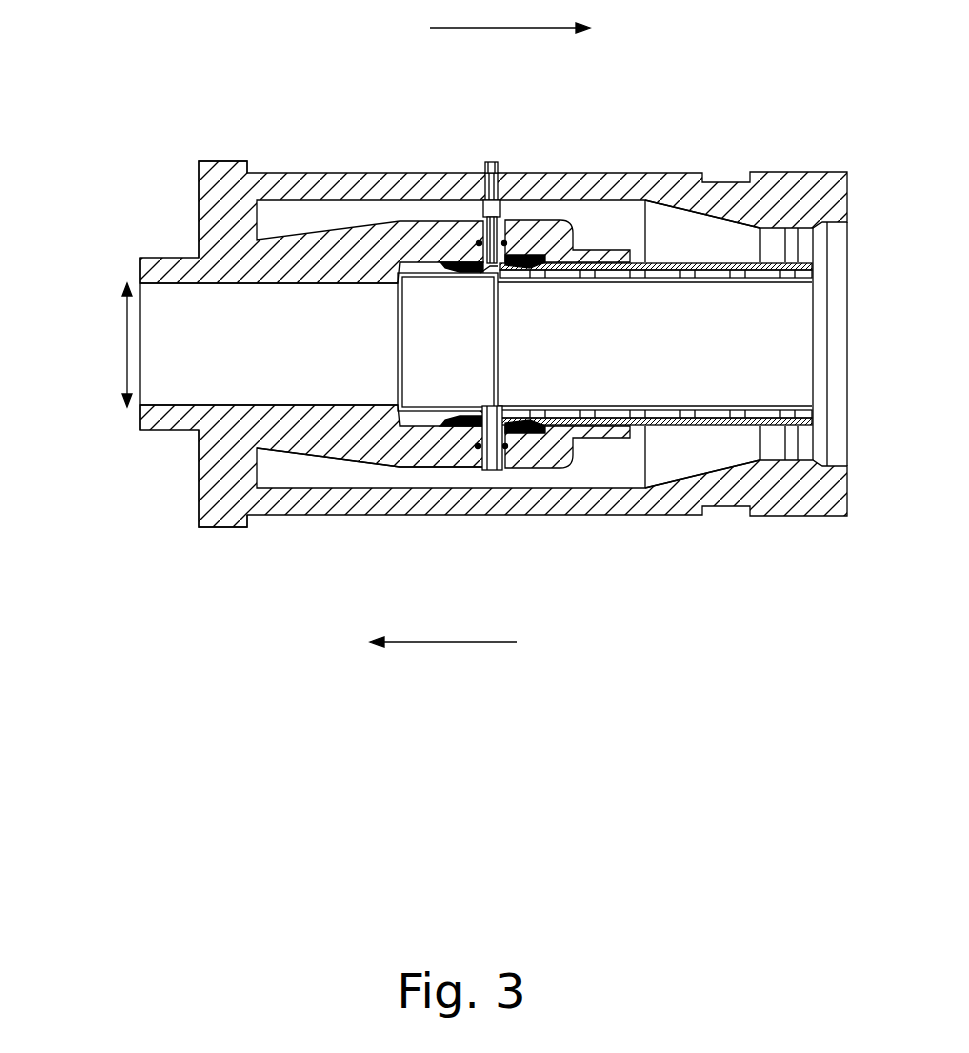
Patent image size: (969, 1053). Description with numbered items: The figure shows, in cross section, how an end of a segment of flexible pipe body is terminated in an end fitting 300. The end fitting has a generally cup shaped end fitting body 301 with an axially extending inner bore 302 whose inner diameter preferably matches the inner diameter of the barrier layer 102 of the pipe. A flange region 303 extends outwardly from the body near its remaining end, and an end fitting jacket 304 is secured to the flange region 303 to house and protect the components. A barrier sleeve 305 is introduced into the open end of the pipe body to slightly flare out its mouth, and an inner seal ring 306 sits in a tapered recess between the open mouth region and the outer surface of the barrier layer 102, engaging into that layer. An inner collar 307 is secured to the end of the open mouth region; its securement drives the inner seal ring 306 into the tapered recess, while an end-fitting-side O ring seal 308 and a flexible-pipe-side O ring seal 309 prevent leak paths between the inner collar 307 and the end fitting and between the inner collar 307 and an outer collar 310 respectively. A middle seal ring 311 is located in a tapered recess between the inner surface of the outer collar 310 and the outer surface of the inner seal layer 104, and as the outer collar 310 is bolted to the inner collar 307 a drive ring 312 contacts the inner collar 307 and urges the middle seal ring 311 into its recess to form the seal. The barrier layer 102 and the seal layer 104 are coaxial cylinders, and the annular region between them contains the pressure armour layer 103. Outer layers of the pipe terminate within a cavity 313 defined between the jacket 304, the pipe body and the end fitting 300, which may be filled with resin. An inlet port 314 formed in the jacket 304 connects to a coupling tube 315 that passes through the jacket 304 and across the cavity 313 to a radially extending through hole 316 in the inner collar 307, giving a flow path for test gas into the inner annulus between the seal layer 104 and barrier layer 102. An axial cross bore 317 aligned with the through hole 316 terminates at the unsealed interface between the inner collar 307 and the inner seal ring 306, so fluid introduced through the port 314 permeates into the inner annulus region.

The end fitting 300 is at (160, 555).
The end fitting body 301 is at (210, 264).
The inner bore 302 is at (200, 364).
The flange region 303 is at (218, 527).
The end fitting jacket 304 is at (515, 505).
The barrier sleeve 305 is at (405, 283).
The inner seal ring 306 is at (477, 263).
The inner collar 307 is at (482, 462).
The end-fitting-side O ring seal 308 is at (372, 450).
The flexible-pipe-side O ring seal 309 is at (510, 450).
The outer collar 310 is at (547, 222).
The middle seal ring 311 is at (617, 222).
The drive ring 312 is at (512, 268).
The cavity 313 is at (674, 247).
The inlet port 314 is at (498, 168).
The coupling tube 315 is at (470, 180).
The through hole 316 is at (503, 415).
The cross bore 317 is at (488, 288).
The barrier layer 102 is at (795, 283).
The pressure armour layer 103 is at (803, 412).
The inner seal layer 104 is at (803, 260).